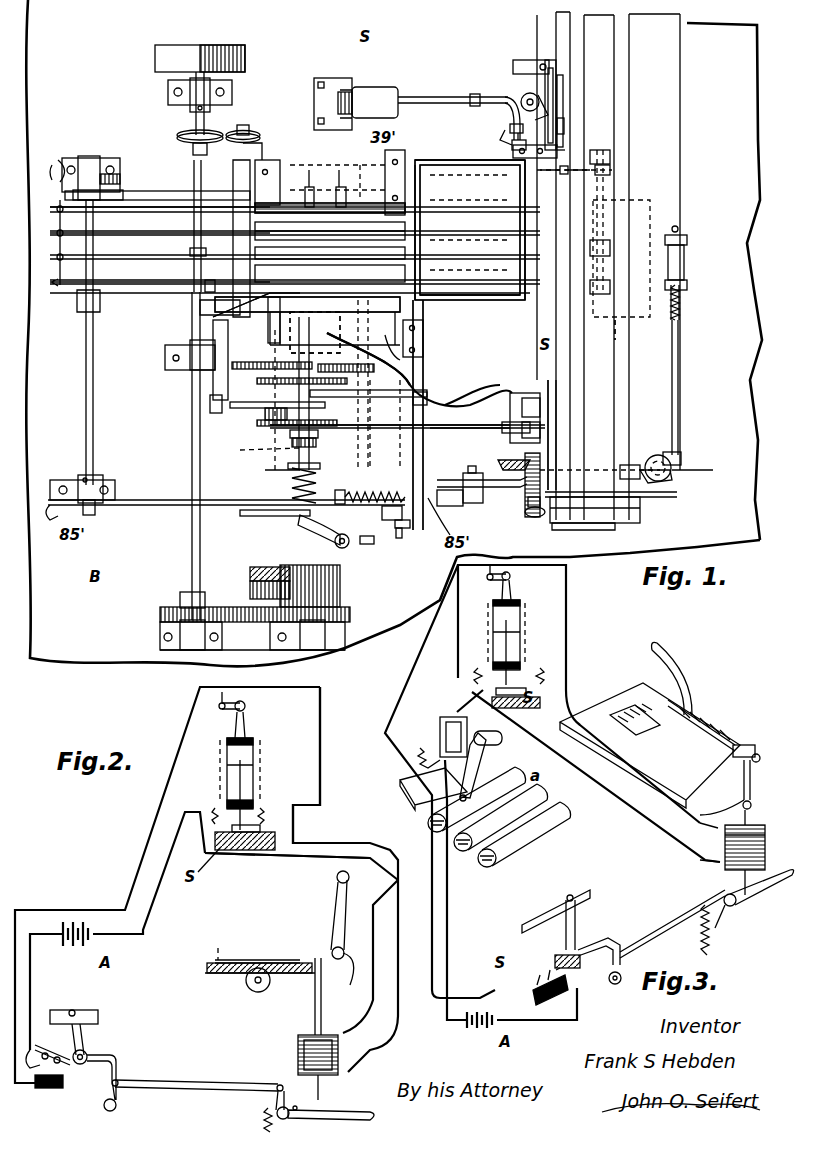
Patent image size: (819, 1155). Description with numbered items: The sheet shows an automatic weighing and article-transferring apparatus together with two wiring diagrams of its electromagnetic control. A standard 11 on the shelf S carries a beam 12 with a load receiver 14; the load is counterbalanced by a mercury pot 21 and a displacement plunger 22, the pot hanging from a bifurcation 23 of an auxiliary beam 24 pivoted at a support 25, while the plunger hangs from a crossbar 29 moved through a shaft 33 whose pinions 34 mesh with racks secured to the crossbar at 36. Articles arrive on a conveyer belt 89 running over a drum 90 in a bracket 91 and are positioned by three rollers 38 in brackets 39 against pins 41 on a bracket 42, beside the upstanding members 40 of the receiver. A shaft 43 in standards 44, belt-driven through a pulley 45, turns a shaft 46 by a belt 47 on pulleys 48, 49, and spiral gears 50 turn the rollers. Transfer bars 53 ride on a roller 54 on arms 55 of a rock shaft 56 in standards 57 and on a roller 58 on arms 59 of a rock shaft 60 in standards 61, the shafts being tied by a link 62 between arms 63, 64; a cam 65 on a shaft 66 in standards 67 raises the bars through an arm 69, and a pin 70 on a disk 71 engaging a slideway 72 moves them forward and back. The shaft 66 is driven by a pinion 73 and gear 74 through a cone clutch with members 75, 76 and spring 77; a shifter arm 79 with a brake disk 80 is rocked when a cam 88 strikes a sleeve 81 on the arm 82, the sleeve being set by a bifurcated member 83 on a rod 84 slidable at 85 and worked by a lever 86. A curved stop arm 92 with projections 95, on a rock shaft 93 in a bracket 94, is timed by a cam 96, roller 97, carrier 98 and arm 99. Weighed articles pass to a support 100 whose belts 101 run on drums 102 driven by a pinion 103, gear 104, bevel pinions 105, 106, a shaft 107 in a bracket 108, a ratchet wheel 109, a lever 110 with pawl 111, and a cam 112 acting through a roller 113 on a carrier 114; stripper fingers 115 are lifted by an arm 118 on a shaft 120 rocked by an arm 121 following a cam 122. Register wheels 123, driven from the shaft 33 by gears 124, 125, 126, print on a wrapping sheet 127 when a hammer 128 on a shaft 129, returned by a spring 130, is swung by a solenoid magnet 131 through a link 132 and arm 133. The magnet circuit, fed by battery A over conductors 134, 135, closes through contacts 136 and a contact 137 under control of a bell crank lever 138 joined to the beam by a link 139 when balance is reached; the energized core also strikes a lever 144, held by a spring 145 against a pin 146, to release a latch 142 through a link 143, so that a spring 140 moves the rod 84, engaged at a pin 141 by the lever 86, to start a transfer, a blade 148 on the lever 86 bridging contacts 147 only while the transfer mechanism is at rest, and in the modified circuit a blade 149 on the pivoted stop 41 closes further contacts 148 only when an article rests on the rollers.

In FIG. 1, the bracket 11 is at (318, 100).
In FIG. 1, the rod 12 is at (425, 97).
In FIG. 1, the frame top 14 is at (475, 300).
In FIG. 1, the pivot 21 is at (557, 107).
In FIG. 1, the link 22 is at (505, 98).
In FIG. 1, the pivot disc 23 is at (522, 96).
In FIG. 1, the collar 24 is at (462, 95).
In FIG. 1, the cylinder 25 is at (400, 90).
In FIG. 1, the bracket 29 is at (525, 60).
In FIG. 1, the contact 33 is at (562, 108).
In FIG. 1, the contact bar 34 is at (562, 80).
In FIG. 1, the upright bar 36 is at (549, 60).
In FIG. 1, the roller 38 is at (292, 203).
In FIG. 1, the frame plate 39 is at (275, 162).
In FIG. 1, the housing 40 is at (465, 305).
In FIG. 1, the arm 41 is at (311, 180).
In FIG. 3, the arm 41 is at (484, 775).
In FIG. 1, the plate 42 is at (330, 190).
In FIG. 3, the plate 42 is at (433, 789).
In FIG. 1, the shaft 43 is at (190, 435).
In FIG. 1, the bearing block 44 is at (168, 93).
In FIG. 1, the handle box 45 is at (155, 52).
In FIG. 1, the bracket 46 is at (233, 178).
In FIG. 1, the hub 47 is at (208, 145).
In FIG. 1, the gear 48 is at (190, 136).
In FIG. 1, the gear 49 is at (248, 133).
In FIG. 1, the rod 50 is at (207, 226).
In FIG. 1, the rod 53 is at (130, 238).
In FIG. 1, the rod 54 is at (165, 287).
In FIG. 1, the rod 55 is at (126, 310).
In FIG. 1, the post 56 is at (95, 225).
In FIG. 1, the bearing block 57 is at (85, 160).
In FIG. 1, the roller 58 is at (456, 215).
In FIG. 3, the roller 58 is at (478, 864).
In FIG. 1, the housing bottom 59 is at (445, 300).
In FIG. 1, the spring 60 is at (390, 492).
In FIG. 1, the upright bar 61 is at (420, 170).
In FIG. 1, the cross bar 62 is at (157, 186).
In FIG. 1, the pin 63 is at (341, 185).
In FIG. 1, the bolt 64 is at (55, 159).
In FIG. 1, the gear 65 is at (303, 356).
In FIG. 1, the shaft 66 is at (290, 460).
In FIG. 1, the base 67 is at (252, 658).
In FIG. 1, the cord 69 is at (415, 372).
In FIG. 1, the block 70 is at (219, 302).
In FIG. 1, the plate 71 is at (225, 300).
In FIG. 1, the collar 72 is at (212, 278).
In FIG. 1, the rack 73 is at (165, 612).
In FIG. 1, the gear 74 is at (345, 615).
In FIG. 1, the block 75 is at (250, 592).
In FIG. 1, the block 76 is at (252, 572).
In FIG. 1, the spring 77 is at (292, 485).
In FIG. 1, the lever 79 is at (325, 530).
In FIG. 1, the bar 80 is at (270, 520).
In FIG. 1, the pin 81 is at (402, 538).
In FIG. 1, the pivot 82 is at (348, 545).
In FIG. 1, the block 83 is at (406, 525).
In FIG. 1, the rod 84 is at (222, 506).
In FIG. 2, the rod 84 is at (98, 1018).
In FIG. 3, the rod 84 is at (530, 922).
In FIG. 1, the clamp 85 is at (95, 512).
In FIG. 1, the lever 86 is at (458, 480).
In FIG. 2, the lever 86 is at (84, 1040).
In FIG. 3, the lever 86 is at (577, 925).
In FIG. 1, the pin 88 is at (368, 545).
In FIG. 1, the link 89 is at (258, 453).
In FIG. 1, the link 90 is at (420, 352).
In FIG. 1, the bracket 91 is at (425, 340).
In FIG. 1, the block 92 is at (259, 320).
In FIG. 1, the bar 93 is at (213, 378).
In FIG. 1, the plate 94 is at (215, 368).
In FIG. 1, the housing 95 is at (340, 302).
In FIG. 1, the gear 96 is at (293, 407).
In FIG. 1, the gear 97 is at (270, 424).
In FIG. 1, the gear 98 is at (293, 391).
In FIG. 1, the block 99 is at (210, 402).
In FIG. 1, the plate 100 is at (650, 395).
In FIG. 2, the plate 100 is at (212, 974).
In FIG. 3, the plate 100 is at (650, 745).
In FIG. 1, the bar 101 is at (572, 470).
In FIG. 2, the bar 101 is at (240, 960).
In FIG. 1, the base 102 is at (595, 523).
In FIG. 2, the base 102 is at (207, 968).
In FIG. 1, the gear 103 is at (524, 523).
In FIG. 1, the rack 104 is at (530, 490).
In FIG. 1, the block 105 is at (528, 476).
In FIG. 1, the block 106 is at (503, 457).
In FIG. 1, the edge 107 is at (479, 386).
In FIG. 1, the block 108 is at (540, 400).
In FIG. 1, the block 109 is at (540, 428).
In FIG. 1, the bar 110 is at (515, 422).
In FIG. 1, the pin 111 is at (503, 436).
In FIG. 1, the gear 112 is at (325, 449).
In FIG. 1, the collar 113 is at (326, 435).
In FIG. 1, the bar 114 is at (372, 437).
In FIG. 1, the dashed housing 115 is at (530, 290).
In FIG. 1, the frame side 118 is at (495, 300).
In FIG. 1, the rod 120 is at (394, 425).
In FIG. 1, the rod 121 is at (393, 425).
In FIG. 1, the bar 122 is at (368, 389).
In FIG. 1, the ratchet 123 is at (680, 290).
In FIG. 2, the ratchet 123 is at (250, 988).
In FIG. 3, the ratchet 123 is at (636, 705).
In FIG. 1, the rod 124 is at (571, 165).
In FIG. 1, the collar 125 is at (570, 170).
In FIG. 1, the block 126 is at (610, 170).
In FIG. 1, the stop 127 is at (622, 338).
In FIG. 2, the stop 127 is at (218, 945).
In FIG. 1, the lever 128 is at (687, 262).
In FIG. 2, the lever 128 is at (338, 880).
In FIG. 3, the lever 128 is at (680, 650).
In FIG. 1, the rod 129 is at (679, 330).
In FIG. 2, the rod 129 is at (352, 975).
In FIG. 3, the rod 129 is at (756, 750).
In FIG. 1, the spring 130 is at (681, 305).
In FIG. 3, the spring 130 is at (712, 720).
In FIG. 1, the solenoid 131 is at (655, 458).
In FIG. 2, the solenoid 131 is at (298, 1050).
In FIG. 3, the solenoid 131 is at (700, 860).
In FIG. 2, the rod 132 is at (314, 992).
In FIG. 3, the rod 132 is at (730, 780).
In FIG. 1, the link 133 is at (675, 480).
In FIG. 3, the link 133 is at (752, 790).
In FIG. 2, the wire 134 is at (262, 865).
In FIG. 3, the wire 134 is at (620, 815).
In FIG. 2, the wire 135 is at (321, 765).
In FIG. 3, the wire 135 is at (558, 712).
In FIG. 2, the coil 136 is at (220, 750).
In FIG. 3, the coil 136 is at (488, 620).
In FIG. 2, the core 137 is at (242, 790).
In FIG. 3, the core 137 is at (503, 646).
In FIG. 1, the rod 138 is at (512, 145).
In FIG. 2, the rod 138 is at (245, 720).
In FIG. 3, the rod 138 is at (511, 588).
In FIG. 1, the lever 139 is at (510, 128).
In FIG. 2, the lever 139 is at (247, 702).
In FIG. 3, the lever 139 is at (511, 574).
In FIG. 1, the bar 140 is at (300, 470).
In FIG. 1, the pin 141 is at (470, 503).
In FIG. 2, the pin 141 is at (75, 1012).
In FIG. 3, the pin 141 is at (570, 895).
In FIG. 1, the lever 142 is at (480, 505).
In FIG. 2, the lever 142 is at (118, 1070).
In FIG. 3, the lever 142 is at (622, 962).
In FIG. 1, the link 143 is at (600, 474).
In FIG. 2, the link 143 is at (208, 1082).
In FIG. 3, the link 143 is at (660, 928).
In FIG. 2, the lever 144 is at (268, 1108).
In FIG. 3, the lever 144 is at (738, 906).
In FIG. 2, the spring 145 is at (262, 1128).
In FIG. 3, the spring 145 is at (712, 950).
In FIG. 2, the handle 146 is at (295, 1106).
In FIG. 2, the contact 147 is at (55, 1088).
In FIG. 3, the contact 147 is at (535, 988).
In FIG. 2, the contact 148 is at (45, 1052).
In FIG. 3, the contact 148 is at (442, 722).
In FIG. 3, the spring 149 is at (418, 758).